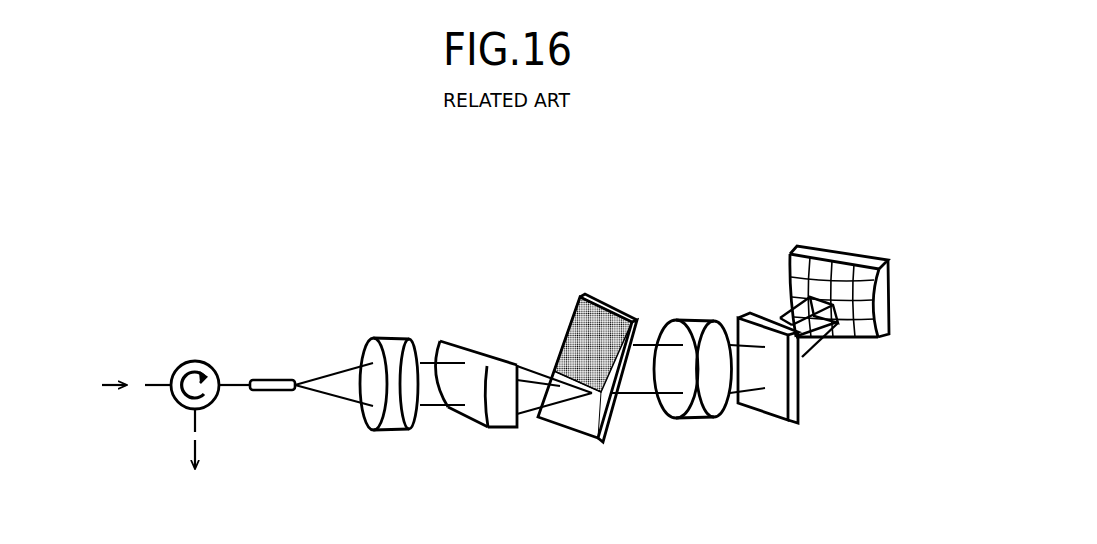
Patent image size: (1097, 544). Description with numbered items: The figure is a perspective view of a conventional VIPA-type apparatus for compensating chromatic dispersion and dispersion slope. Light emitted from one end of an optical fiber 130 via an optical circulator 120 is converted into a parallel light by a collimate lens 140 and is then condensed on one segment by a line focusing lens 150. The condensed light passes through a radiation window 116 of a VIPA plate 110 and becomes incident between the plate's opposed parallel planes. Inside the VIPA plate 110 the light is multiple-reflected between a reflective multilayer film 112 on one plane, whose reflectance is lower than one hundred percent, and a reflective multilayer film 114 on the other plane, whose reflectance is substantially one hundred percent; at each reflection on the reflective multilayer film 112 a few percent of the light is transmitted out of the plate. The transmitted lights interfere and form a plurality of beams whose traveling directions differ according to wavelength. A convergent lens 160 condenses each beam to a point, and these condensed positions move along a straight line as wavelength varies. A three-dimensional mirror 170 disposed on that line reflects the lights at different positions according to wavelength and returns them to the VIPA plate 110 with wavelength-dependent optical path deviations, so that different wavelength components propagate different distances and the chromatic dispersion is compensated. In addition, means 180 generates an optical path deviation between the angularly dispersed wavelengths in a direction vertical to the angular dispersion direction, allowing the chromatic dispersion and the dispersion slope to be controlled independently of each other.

The VIPA plate 110 is at (595, 358).
The reflective multilayer film 112 is at (613, 418).
The reflective multilayer film 114 is at (578, 328).
The radiation window 116 is at (572, 403).
The optical circulator 120 is at (195, 360).
The optical fiber 130 is at (268, 378).
The collimate lens 140 is at (383, 337).
The line focusing lens 150 is at (457, 340).
The convergent lens 160 is at (697, 320).
The three-dimensional mirror 170 is at (813, 245).
The means for generating optical path deviation 180 is at (748, 313).